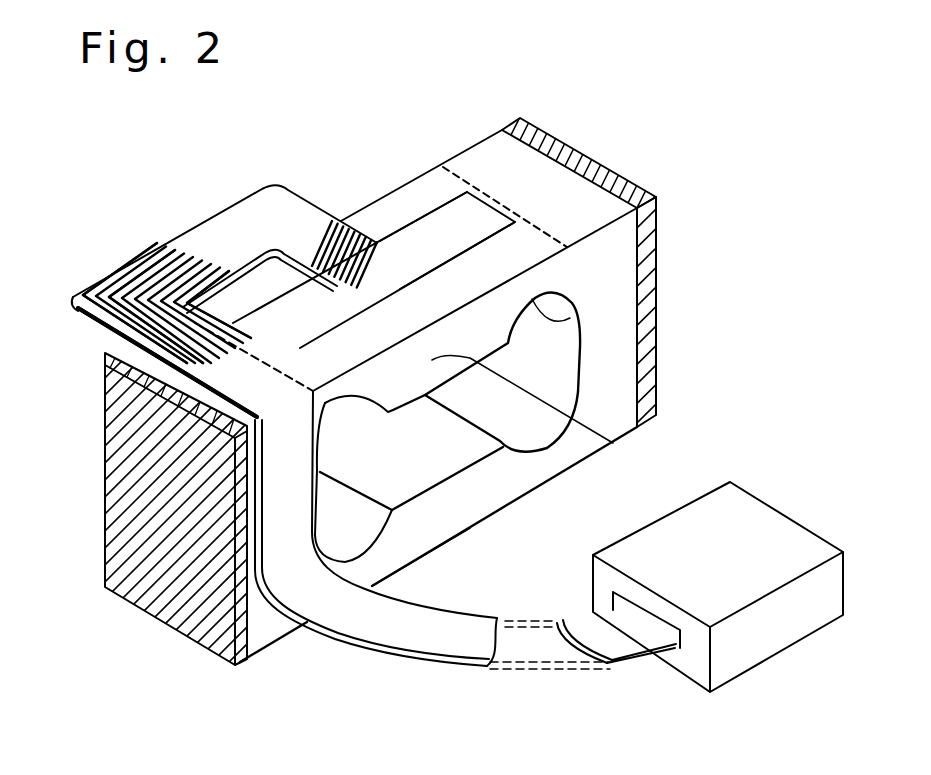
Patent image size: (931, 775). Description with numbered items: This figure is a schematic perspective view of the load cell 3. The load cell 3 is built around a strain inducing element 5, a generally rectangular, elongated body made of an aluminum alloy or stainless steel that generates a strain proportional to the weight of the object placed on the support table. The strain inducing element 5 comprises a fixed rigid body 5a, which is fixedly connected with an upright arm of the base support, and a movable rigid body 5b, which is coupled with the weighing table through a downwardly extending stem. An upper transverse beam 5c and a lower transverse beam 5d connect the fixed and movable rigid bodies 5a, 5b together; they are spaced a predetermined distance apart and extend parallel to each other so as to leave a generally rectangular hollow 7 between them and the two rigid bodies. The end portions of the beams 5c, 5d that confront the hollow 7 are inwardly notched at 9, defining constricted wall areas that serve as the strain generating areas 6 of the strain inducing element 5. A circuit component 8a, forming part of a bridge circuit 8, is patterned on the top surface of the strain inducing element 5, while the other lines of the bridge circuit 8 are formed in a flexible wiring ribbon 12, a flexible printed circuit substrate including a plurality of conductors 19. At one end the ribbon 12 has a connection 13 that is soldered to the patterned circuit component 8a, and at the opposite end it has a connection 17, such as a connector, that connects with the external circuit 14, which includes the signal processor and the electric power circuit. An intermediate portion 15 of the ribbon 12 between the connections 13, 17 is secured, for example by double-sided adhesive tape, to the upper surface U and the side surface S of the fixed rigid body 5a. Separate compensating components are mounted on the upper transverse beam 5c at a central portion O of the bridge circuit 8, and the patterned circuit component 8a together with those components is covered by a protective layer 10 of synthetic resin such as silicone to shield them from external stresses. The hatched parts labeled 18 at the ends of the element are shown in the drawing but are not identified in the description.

The load cell 3 is at (567, 117).
The strain inducing element 5 is at (487, 132).
The fixed rigid body 5a is at (260, 613).
The movable rigid body 5b is at (617, 253).
The upper transverse beam 5c is at (470, 420).
The lower transverse beam 5d is at (482, 498).
The strain generating areas 6 is at (578, 320).
The rectangular hollow 7 is at (580, 370).
The bridge circuit 8 is at (290, 178).
The circuit component 8a is at (437, 220).
The notches 9 is at (572, 313).
The protective layer 10 is at (457, 177).
The flexible wiring ribbon 12 is at (117, 263).
The connection 13 is at (340, 273).
The external circuit 14 is at (777, 540).
The intermediate portion 15 is at (107, 363).
The connection 17 is at (675, 642).
The shield plate 18 is at (520, 118).
The conductors 19 is at (150, 250).
The central portion O is at (367, 270).
The upper surface U is at (217, 303).
The side surface S is at (378, 560).